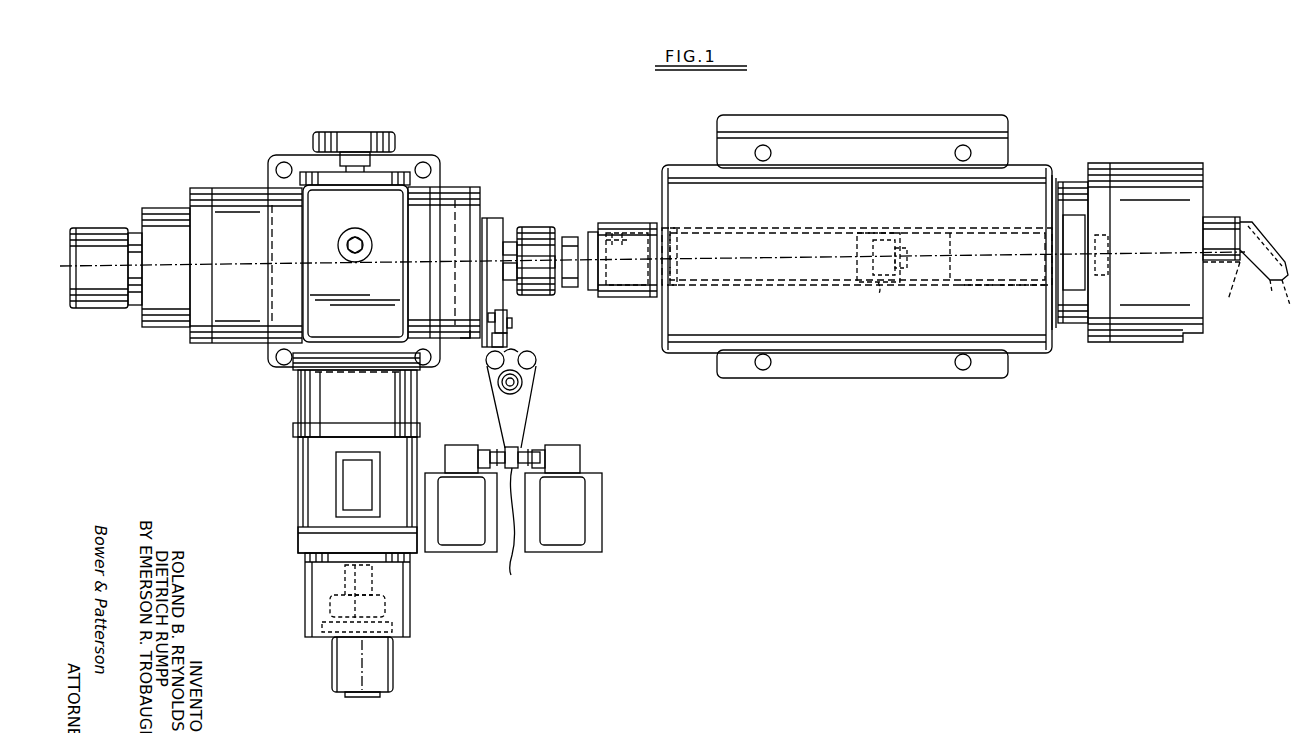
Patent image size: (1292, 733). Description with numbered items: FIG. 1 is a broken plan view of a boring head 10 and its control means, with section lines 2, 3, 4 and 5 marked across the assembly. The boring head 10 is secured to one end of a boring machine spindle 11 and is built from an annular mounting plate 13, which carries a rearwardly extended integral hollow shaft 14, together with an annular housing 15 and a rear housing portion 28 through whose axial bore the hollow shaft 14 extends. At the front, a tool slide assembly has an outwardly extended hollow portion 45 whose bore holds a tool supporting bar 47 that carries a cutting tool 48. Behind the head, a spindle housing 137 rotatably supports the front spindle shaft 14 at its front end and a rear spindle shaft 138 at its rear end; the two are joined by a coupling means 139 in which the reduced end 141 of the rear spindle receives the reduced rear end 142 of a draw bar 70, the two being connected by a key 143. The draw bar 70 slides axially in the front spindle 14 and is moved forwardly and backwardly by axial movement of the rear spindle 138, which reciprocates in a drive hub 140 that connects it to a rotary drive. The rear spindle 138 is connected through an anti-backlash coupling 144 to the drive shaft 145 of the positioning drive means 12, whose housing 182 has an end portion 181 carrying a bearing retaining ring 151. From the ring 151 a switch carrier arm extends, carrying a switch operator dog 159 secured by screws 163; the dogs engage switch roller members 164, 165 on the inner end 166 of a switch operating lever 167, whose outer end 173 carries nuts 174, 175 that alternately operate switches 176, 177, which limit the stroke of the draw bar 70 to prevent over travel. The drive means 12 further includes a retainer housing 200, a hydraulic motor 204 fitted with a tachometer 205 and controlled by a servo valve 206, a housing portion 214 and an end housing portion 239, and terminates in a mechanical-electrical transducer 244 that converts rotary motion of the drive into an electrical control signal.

The section line 2- 2 is at (67, 275).
The section line 3- 3 is at (355, 200).
The section line 4- 4 is at (510, 300).
The section line 5- 5 is at (1040, 290).
The boring head 10 is at (1170, 345).
The boring machine spindle 11 is at (1052, 348).
The drive means 12 is at (258, 343).
The annular mounting plate 13 is at (1102, 175).
The hollow shaft 14 is at (975, 282).
The annular housing 15 is at (1160, 172).
The rear housing portion 28 is at (1075, 185).
The hollow portion 45 is at (1224, 226).
The tool supporting bar 47 is at (1254, 268).
The cutting tool 48 is at (1280, 290).
The draw bar 70 is at (962, 248).
The spindle housing 137 is at (897, 318).
The rear spindle shaft 138 is at (804, 248).
The coupling means 139 is at (880, 240).
The drive hub 140 is at (626, 221).
The reduced end 141 is at (868, 268).
The reduced rear end 142 is at (902, 260).
The key 143 is at (882, 287).
The anti-backlash coupling 144 is at (548, 228).
The drive shaft 145 is at (514, 266).
The bearing retaining ring 151 is at (493, 216).
The switch operator dog 159 is at (508, 341).
The screws 163 is at (507, 322).
The switch roller member 164 is at (487, 364).
The switch roller member 165 is at (537, 361).
The inner end 166 is at (500, 386).
The switch operating lever 167 is at (528, 412).
The outer end 173 is at (532, 528).
The nut 174 is at (496, 450).
The nut 175 is at (520, 450).
The switch 176 is at (467, 518).
The switch 177 is at (562, 511).
The end portion 181 is at (463, 335).
The positioning drive means housing 182 is at (312, 240).
The retainer housing 200 is at (310, 408).
The hydraulic motor 204 is at (297, 485).
The tachometer 205 is at (352, 659).
The servo valve 206 is at (355, 490).
The housing portion 214 is at (233, 208).
The end housing portion 239 is at (160, 228).
The mechanical-electrical transducer 244 is at (100, 244).